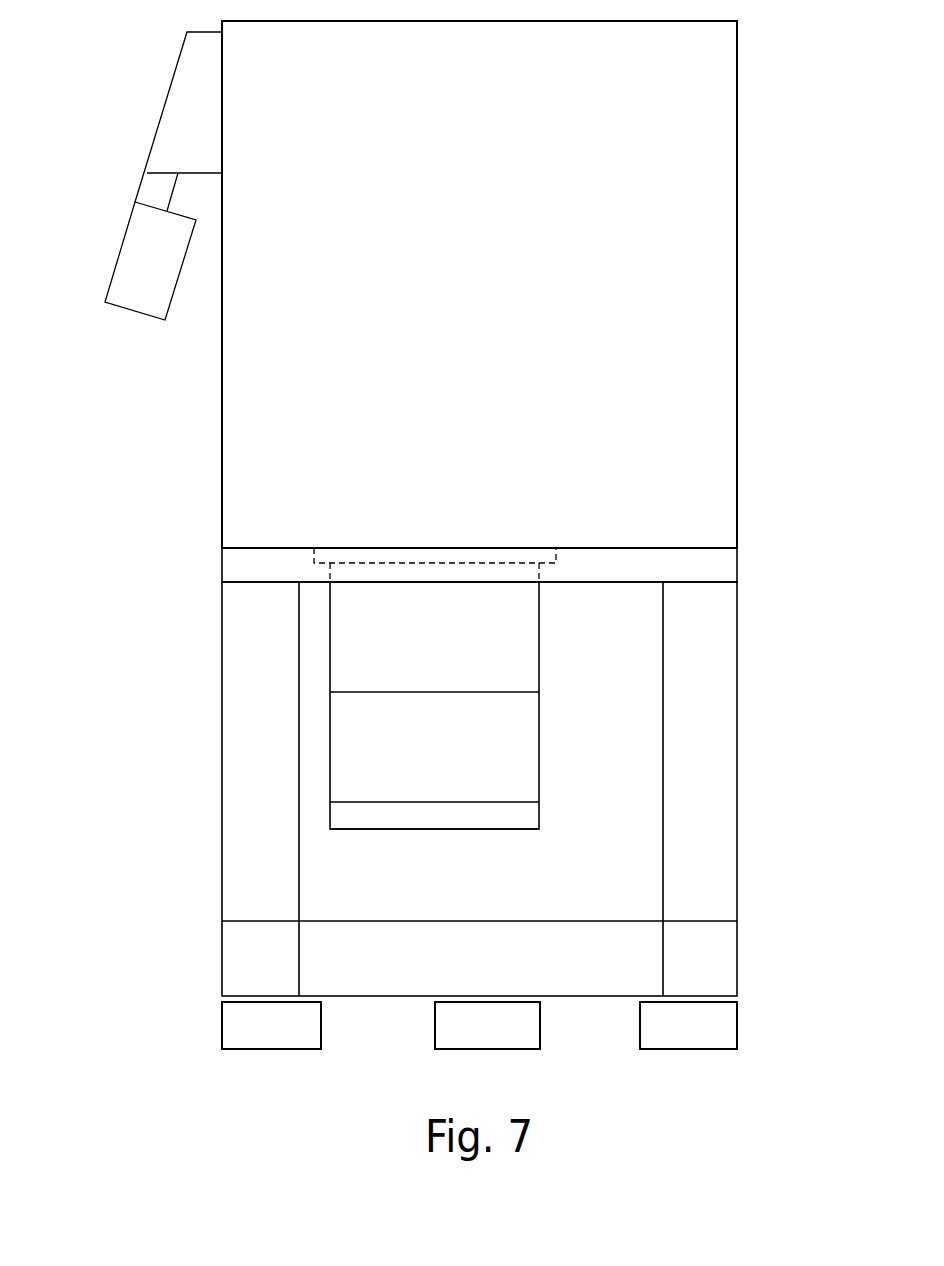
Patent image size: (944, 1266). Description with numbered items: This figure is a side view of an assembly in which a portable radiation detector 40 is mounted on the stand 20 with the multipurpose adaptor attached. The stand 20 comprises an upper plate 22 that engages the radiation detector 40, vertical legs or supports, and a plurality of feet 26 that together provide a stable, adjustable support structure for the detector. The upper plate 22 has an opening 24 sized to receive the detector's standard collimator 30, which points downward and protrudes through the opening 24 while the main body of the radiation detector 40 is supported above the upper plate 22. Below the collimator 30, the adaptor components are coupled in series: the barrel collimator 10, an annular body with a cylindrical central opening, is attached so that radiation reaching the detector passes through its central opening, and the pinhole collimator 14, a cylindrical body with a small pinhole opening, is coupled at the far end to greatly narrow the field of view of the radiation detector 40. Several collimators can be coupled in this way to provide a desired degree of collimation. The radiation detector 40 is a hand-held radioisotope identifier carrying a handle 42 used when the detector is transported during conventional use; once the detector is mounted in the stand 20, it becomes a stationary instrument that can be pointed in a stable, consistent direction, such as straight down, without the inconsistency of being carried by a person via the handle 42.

The barrel collimator 10 is at (539, 752).
The pinhole collimator 14 is at (539, 812).
The stand 20 is at (737, 798).
The upper plate 22 is at (737, 563).
The opening 24 is at (546, 563).
The feet 26 is at (737, 1024).
The collimator 30 is at (539, 662).
The radiation detector 40 is at (733, 220).
The handle 42 is at (122, 240).